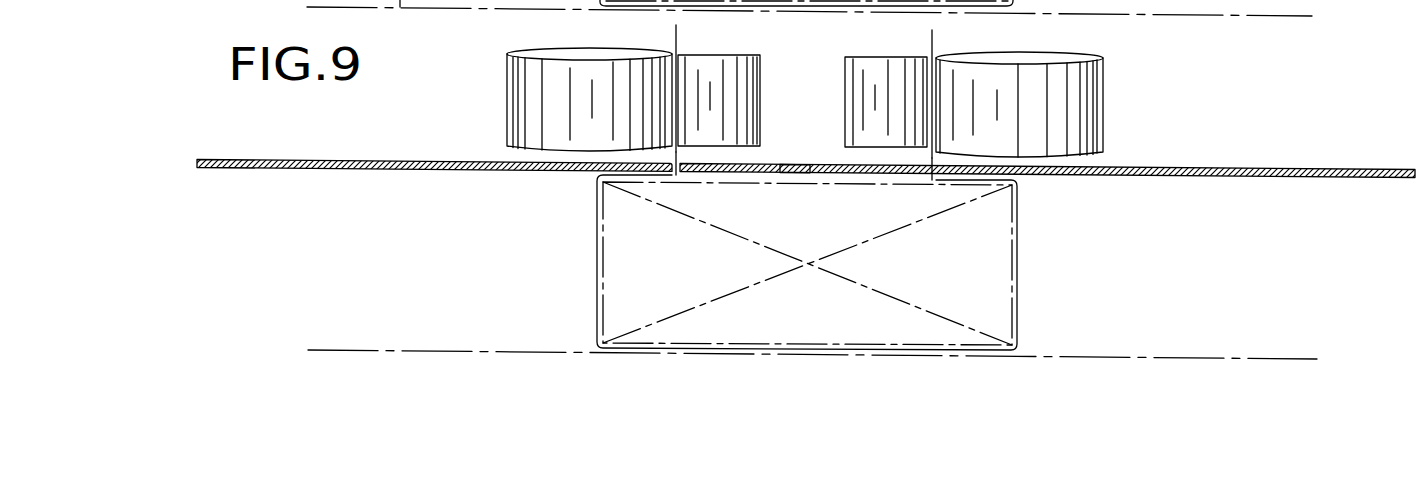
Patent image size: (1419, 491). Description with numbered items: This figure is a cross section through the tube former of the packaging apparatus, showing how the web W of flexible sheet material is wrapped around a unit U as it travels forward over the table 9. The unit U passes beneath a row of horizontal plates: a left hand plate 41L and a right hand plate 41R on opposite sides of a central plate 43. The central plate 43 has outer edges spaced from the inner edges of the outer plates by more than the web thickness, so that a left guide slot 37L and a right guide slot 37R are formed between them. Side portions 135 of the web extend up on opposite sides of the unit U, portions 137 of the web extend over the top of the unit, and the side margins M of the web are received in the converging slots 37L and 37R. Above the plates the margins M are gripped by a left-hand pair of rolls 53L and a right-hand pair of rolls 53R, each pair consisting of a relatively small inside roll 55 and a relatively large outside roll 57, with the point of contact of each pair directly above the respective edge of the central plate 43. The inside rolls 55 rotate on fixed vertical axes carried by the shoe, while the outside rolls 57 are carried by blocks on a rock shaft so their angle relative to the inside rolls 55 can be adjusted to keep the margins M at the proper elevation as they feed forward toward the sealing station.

The table 9 is at (390, 350).
The side margins M is at (676, 46).
The left guide slot 37L is at (677, 175).
The right guide slot 37R is at (932, 181).
The left hand horizontal plate 41L is at (290, 170).
The right hand horizontal plate 41R is at (1245, 178).
The central plate 43 is at (795, 163).
The left-hand pair of rolls 53L is at (487, 92).
The right-hand pair of rolls 53R is at (1122, 107).
The inside roll 55 is at (712, 68).
The outside roll 57 is at (518, 47).
The web side portions 135 is at (598, 268).
The web top portions 137 is at (612, 184).
The unit U is at (1017, 270).
The web W is at (770, 345).